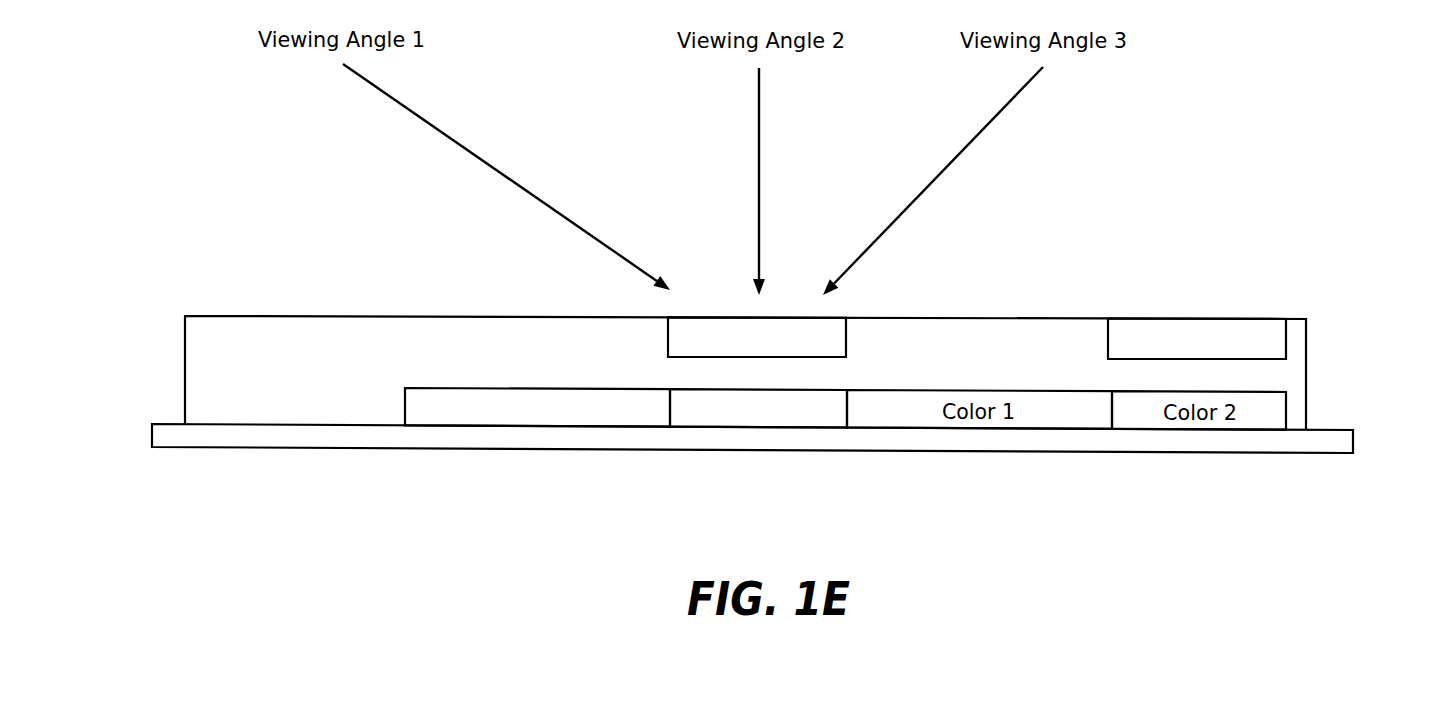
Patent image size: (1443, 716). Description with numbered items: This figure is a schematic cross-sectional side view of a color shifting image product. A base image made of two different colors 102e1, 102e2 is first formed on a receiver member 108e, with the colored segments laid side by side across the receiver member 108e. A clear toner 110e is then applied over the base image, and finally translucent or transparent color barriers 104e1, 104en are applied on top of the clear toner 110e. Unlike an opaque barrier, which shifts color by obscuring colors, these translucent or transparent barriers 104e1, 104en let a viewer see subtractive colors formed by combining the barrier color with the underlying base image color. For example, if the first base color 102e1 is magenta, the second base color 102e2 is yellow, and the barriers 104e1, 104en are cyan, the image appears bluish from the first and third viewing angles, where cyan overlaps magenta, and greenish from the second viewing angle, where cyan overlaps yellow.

The clear toner 110e is at (185, 387).
The receiver member 108e is at (1353, 433).
The translucent or transparent color barrier 104e1 is at (846, 338).
The translucent or transparent color barrier 104en is at (1108, 338).
The first base image color 102e1 is at (430, 415).
The second base image color 102e2 is at (712, 415).